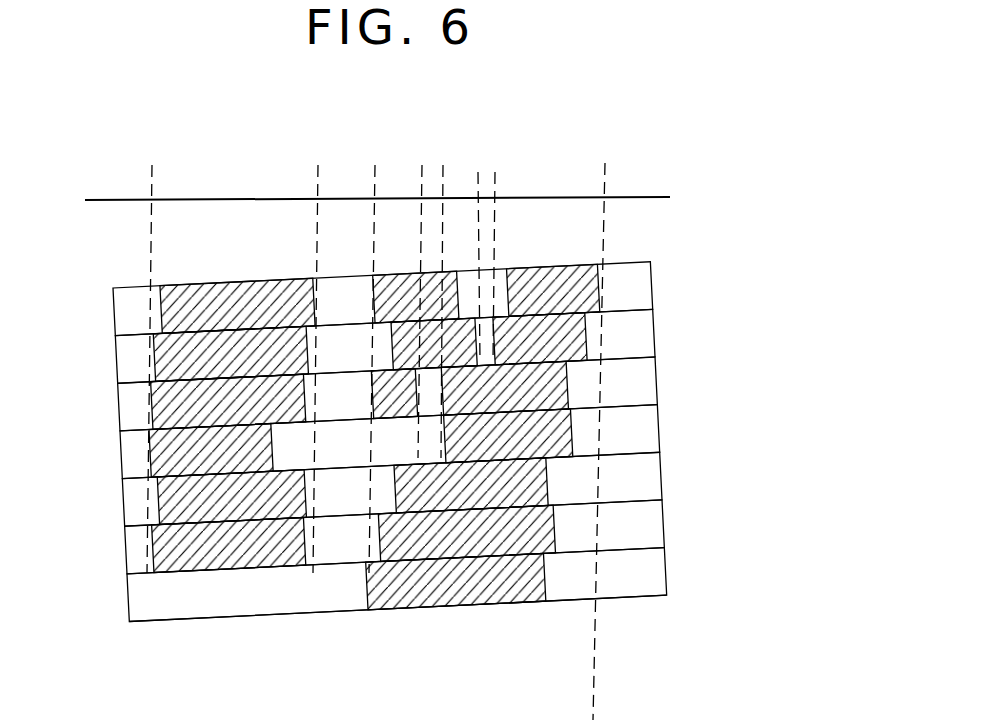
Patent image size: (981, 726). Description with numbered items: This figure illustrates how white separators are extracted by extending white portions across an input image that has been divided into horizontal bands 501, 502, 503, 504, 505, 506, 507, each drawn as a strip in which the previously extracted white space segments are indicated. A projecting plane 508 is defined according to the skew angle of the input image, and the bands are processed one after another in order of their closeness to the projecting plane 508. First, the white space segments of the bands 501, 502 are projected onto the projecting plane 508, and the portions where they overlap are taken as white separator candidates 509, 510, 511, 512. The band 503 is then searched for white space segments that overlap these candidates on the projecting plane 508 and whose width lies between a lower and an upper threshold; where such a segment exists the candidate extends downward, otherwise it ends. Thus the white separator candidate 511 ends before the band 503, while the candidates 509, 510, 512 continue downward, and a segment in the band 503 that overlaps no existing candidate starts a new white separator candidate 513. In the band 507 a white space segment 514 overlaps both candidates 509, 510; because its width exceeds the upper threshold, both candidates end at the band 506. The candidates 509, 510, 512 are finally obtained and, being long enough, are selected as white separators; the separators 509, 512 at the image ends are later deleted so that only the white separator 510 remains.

The band 501 is at (110, 313).
The band 502 is at (113, 353).
The band 503 is at (115, 402).
The band 504 is at (118, 448).
The band 505 is at (120, 502).
The band 506 is at (122, 548).
The band 507 is at (127, 594).
The projecting plane 508 is at (647, 200).
The white separator candidate 509 is at (128, 198).
The white separator candidate 510 is at (375, 178).
The white separator candidate 511 is at (480, 177).
The white separator candidate 512 is at (627, 190).
The white separator candidate 513 is at (443, 172).
The white space segment 514 is at (317, 605).